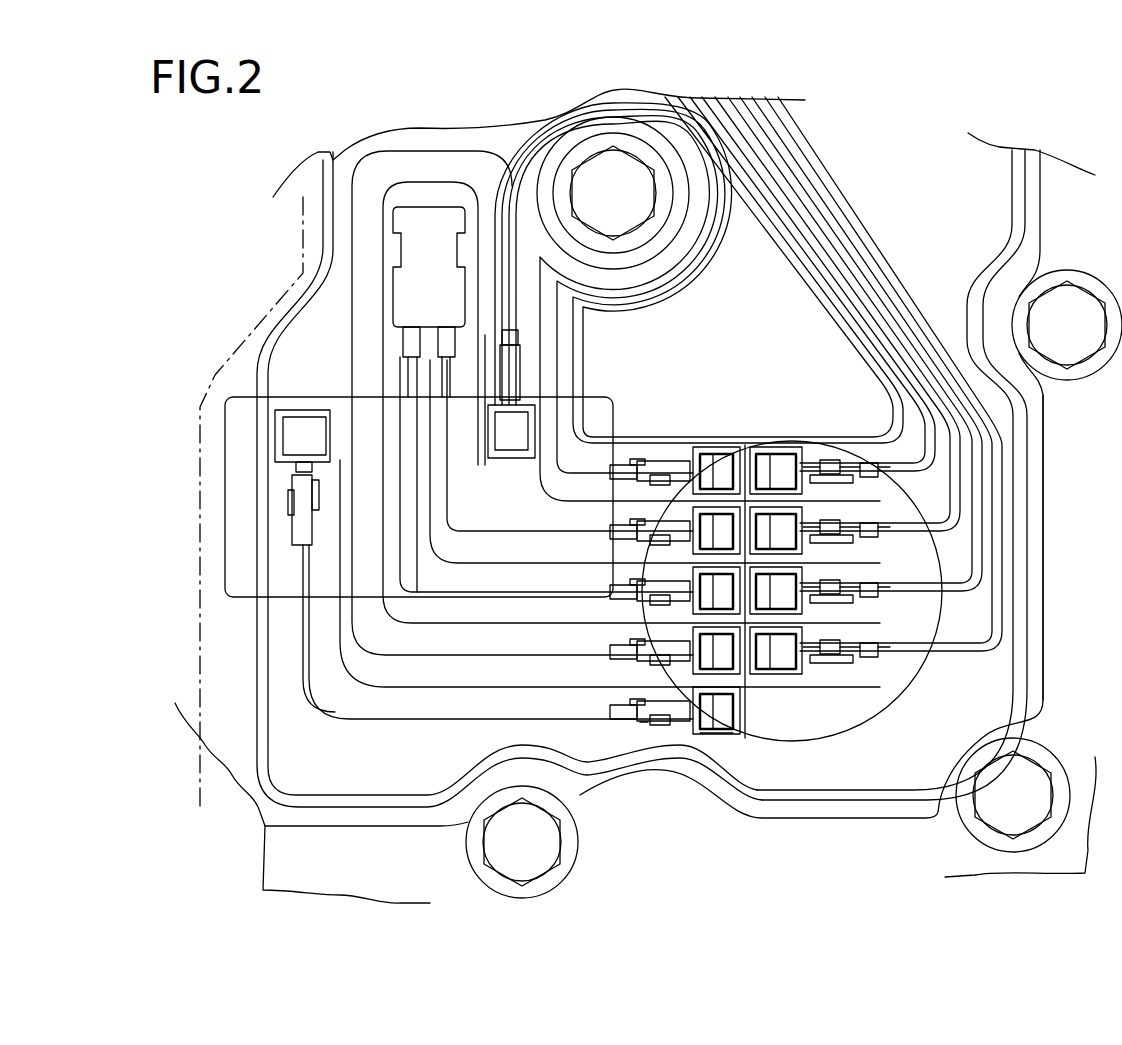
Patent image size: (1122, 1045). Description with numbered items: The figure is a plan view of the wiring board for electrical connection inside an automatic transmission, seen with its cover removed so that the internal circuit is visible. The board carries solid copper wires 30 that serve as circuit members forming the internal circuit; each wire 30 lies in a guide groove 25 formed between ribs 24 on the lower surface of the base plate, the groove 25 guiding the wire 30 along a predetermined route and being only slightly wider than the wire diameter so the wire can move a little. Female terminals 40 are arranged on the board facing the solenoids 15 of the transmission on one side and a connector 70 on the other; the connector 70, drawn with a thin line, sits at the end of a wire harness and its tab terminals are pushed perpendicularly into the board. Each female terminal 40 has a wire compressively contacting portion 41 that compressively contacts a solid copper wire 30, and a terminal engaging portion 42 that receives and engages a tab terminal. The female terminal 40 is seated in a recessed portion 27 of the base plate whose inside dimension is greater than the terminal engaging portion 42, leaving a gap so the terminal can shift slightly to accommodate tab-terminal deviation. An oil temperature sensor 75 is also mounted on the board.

The solenoid 15 is at (225, 440).
The rib 24 is at (980, 290).
The guide groove 25 is at (985, 443).
The recessed portion 27 is at (720, 450).
The solid copper wire 30 is at (1000, 520).
The female terminal 40 is at (290, 520).
The wire compressively contacting portion 41 is at (650, 727).
The terminal engaging portion 42 is at (720, 740).
The connector 70 is at (915, 675).
The oil temperature sensor 75 is at (430, 225).